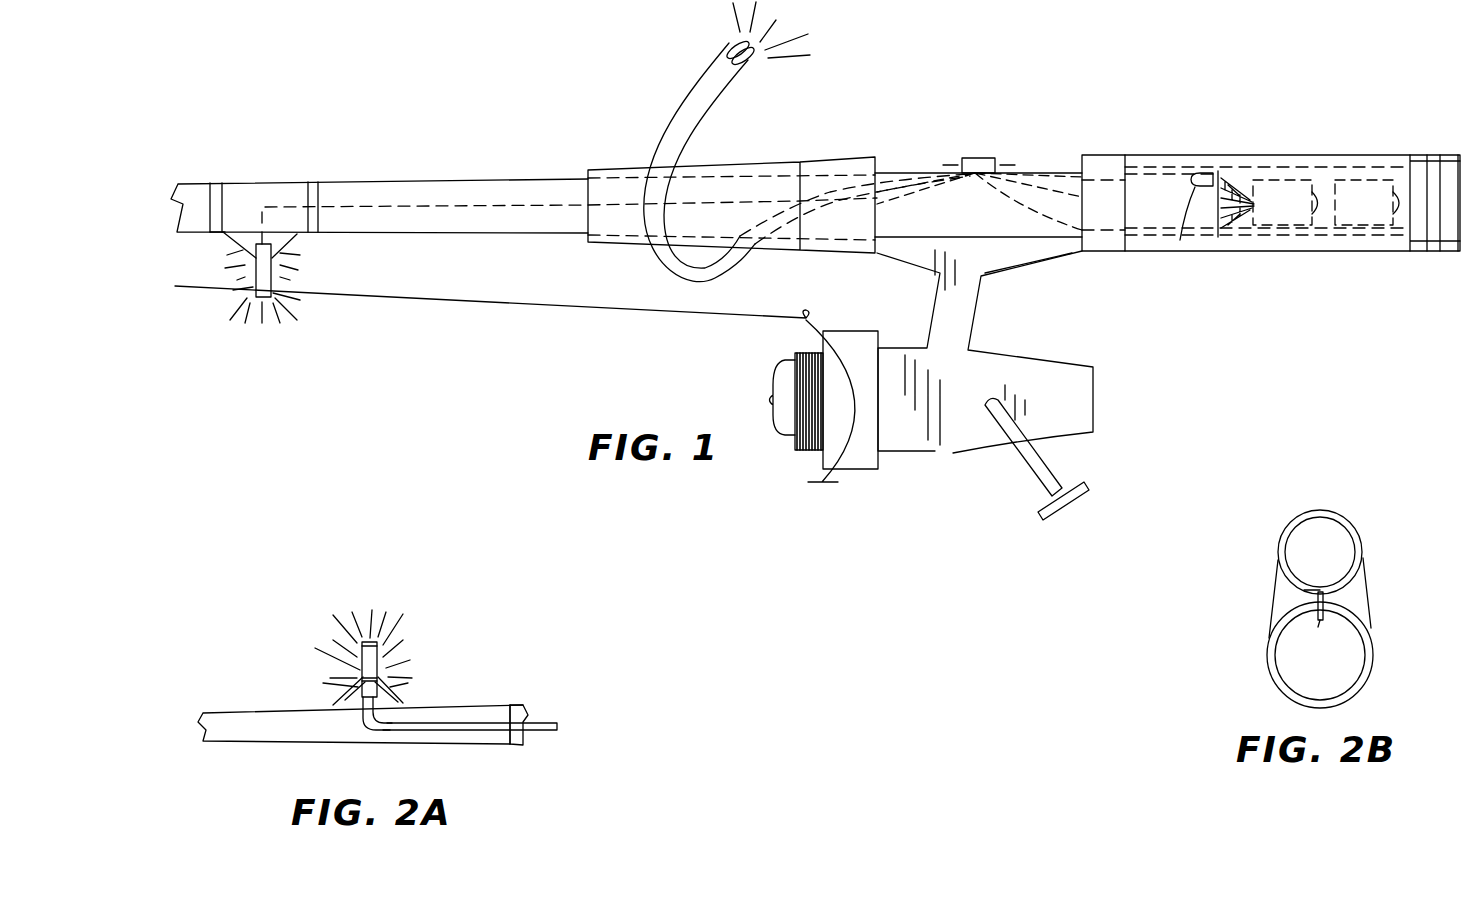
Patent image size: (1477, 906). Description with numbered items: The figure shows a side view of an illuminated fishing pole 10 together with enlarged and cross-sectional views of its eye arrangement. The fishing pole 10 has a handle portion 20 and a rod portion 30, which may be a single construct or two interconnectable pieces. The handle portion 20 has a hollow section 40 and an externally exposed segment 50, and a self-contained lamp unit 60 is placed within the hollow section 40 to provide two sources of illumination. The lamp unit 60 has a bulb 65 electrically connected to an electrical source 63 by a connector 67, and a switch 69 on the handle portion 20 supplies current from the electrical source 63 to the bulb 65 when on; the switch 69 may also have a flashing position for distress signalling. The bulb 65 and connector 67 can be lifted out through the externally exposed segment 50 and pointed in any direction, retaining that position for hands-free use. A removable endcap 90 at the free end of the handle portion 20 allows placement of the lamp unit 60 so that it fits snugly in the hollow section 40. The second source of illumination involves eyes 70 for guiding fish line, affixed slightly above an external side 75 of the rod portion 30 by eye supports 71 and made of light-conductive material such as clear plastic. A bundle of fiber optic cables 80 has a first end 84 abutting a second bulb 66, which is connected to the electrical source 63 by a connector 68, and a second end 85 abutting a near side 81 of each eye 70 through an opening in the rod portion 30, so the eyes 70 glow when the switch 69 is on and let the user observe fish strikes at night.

In FIG. 1, the fishing pole 10 is at (1342, 90).
In FIG. 1, the handle portion 20 is at (1030, 255).
In FIG. 1, the rod portion 30 is at (478, 238).
In FIG. 2A, the rod portion 30 is at (253, 743).
In FIG. 2B, the rod portion 30 is at (1370, 678).
In FIG. 1, the hollow section 40 is at (912, 228).
In FIG. 1, the externally exposed segment 50 is at (745, 248).
In FIG. 1, the self-contained lamp unit 60 is at (1220, 238).
In FIG. 1, the electrical source 63 is at (1283, 226).
In FIG. 1, the bulb 65 is at (750, 60).
In FIG. 1, the second bulb 66 is at (1200, 188).
In FIG. 1, the connector 67 is at (680, 130).
In FIG. 1, the connector 68 is at (1125, 165).
In FIG. 1, the switch 69 is at (975, 156).
In FIG. 1, the eyes 70 is at (258, 297).
In FIG. 2A, the eyes 70 is at (372, 640).
In FIG. 2B, the eyes 70 is at (1352, 525).
In FIG. 1, the eye supports 71 is at (290, 242).
In FIG. 2A, the eye supports 71 is at (395, 660).
In FIG. 2B, the eye supports 71 is at (1368, 590).
In FIG. 1, the external side 75 is at (228, 234).
In FIG. 2A, the external side 75 is at (492, 705).
In FIG. 1, the fiber optic cables 80 is at (412, 200).
In FIG. 2A, the fiber optic cables 80 is at (507, 733).
In FIG. 2B, the fiber optic cables 80 is at (1318, 620).
In FIG. 1, the near side 81 is at (228, 242).
In FIG. 2A, the near side 81 is at (340, 698).
In FIG. 2B, the near side 81 is at (1304, 590).
In FIG. 1, the first end 84 is at (1192, 188).
In FIG. 1, the second end 85 is at (264, 230).
In FIG. 2A, the second end 85 is at (383, 703).
In FIG. 2B, the second end 85 is at (1315, 600).
In FIG. 1, the endcap 90 is at (1428, 156).